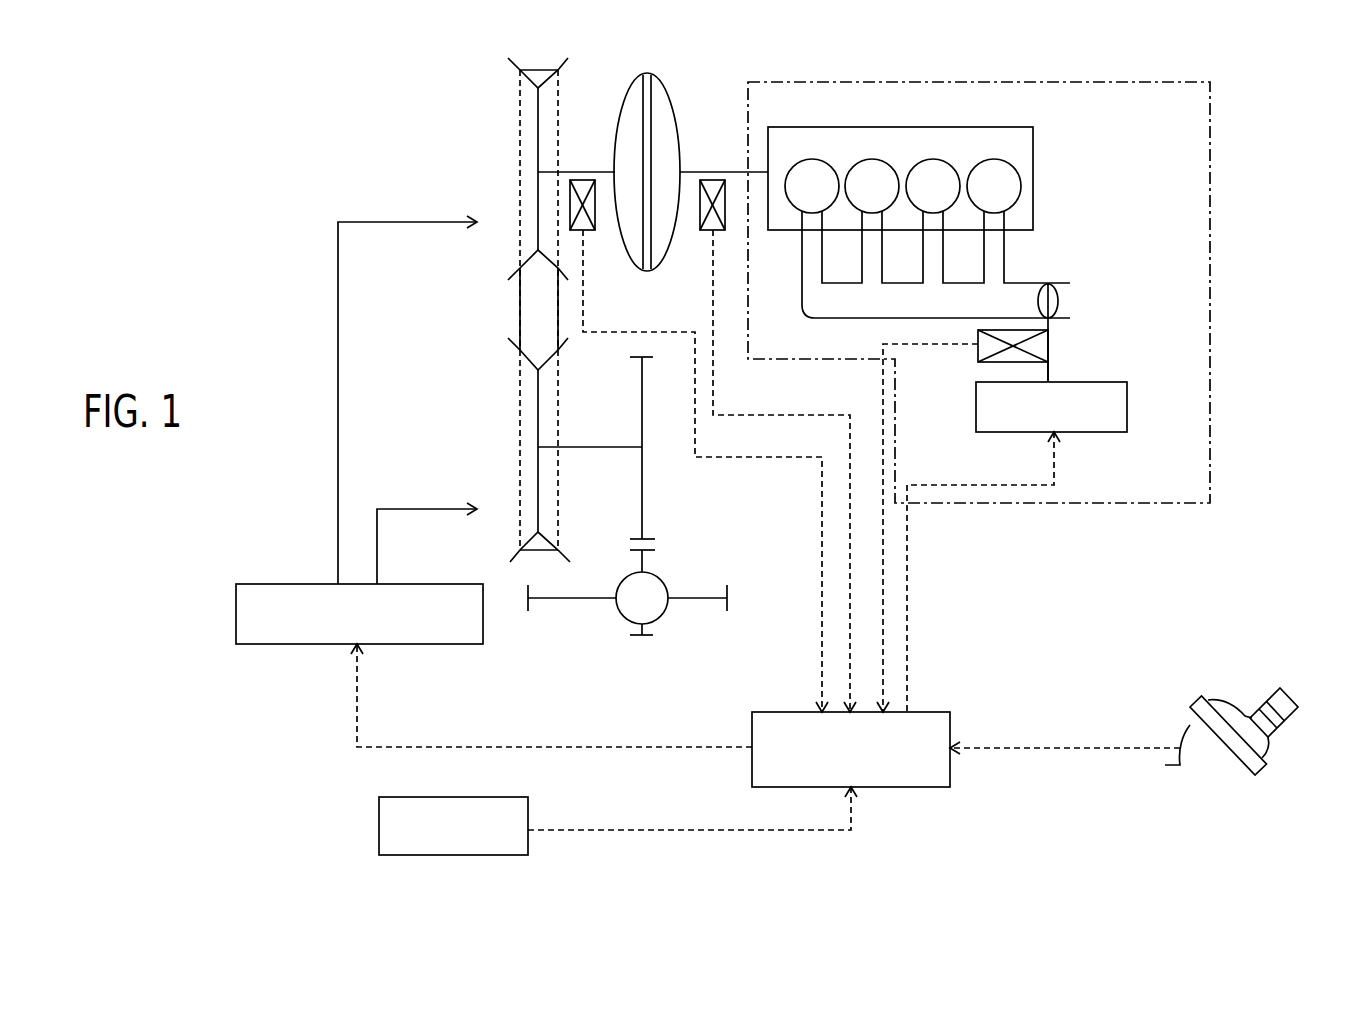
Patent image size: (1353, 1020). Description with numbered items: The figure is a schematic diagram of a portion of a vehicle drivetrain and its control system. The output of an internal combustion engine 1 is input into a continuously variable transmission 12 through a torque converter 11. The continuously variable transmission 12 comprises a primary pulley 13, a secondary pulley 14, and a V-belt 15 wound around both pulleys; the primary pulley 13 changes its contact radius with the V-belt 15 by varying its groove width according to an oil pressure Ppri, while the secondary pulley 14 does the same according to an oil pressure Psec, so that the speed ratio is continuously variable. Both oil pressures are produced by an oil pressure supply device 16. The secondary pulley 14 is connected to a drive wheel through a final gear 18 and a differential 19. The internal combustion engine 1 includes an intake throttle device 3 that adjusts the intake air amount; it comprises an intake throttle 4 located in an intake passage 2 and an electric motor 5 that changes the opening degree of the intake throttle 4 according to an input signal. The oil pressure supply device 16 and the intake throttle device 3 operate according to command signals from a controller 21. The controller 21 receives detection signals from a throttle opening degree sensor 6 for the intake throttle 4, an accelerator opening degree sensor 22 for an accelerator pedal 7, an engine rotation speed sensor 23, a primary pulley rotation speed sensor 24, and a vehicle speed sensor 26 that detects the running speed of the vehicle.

The internal combustion engine 1 is at (1114, 82).
The intake passage 2 is at (1028, 283).
The intake throttle device 3 is at (1063, 347).
The intake throttle 4 is at (1058, 298).
The electric motor 5 is at (1127, 392).
The throttle opening degree sensor 6 is at (978, 350).
The accelerator pedal 7 is at (1207, 697).
The torque converter 11 is at (670, 90).
The continuously variable transmission 12 is at (446, 166).
The primary pulley 13 is at (510, 62).
The secondary pulley 14 is at (516, 345).
The V-belt 15 is at (520, 300).
The oil pressure supply device 16 is at (280, 584).
The final gear 18 is at (642, 517).
The differential 19 is at (665, 583).
The controller 21 is at (950, 720).
The accelerator opening degree sensor 22 is at (1185, 730).
The engine rotation speed sensor 23 is at (713, 230).
The primary pulley rotation speed sensor 24 is at (583, 230).
The vehicle speed sensor 26 is at (379, 822).